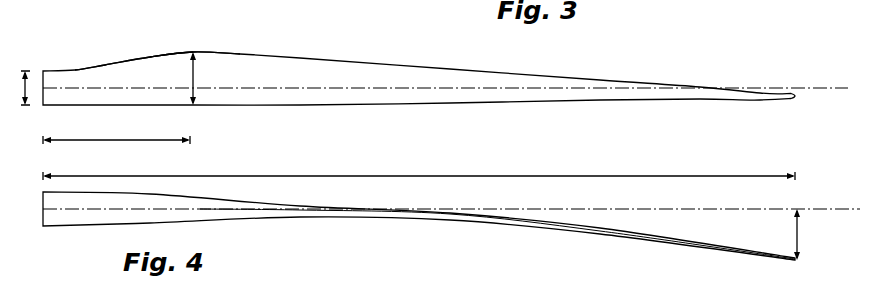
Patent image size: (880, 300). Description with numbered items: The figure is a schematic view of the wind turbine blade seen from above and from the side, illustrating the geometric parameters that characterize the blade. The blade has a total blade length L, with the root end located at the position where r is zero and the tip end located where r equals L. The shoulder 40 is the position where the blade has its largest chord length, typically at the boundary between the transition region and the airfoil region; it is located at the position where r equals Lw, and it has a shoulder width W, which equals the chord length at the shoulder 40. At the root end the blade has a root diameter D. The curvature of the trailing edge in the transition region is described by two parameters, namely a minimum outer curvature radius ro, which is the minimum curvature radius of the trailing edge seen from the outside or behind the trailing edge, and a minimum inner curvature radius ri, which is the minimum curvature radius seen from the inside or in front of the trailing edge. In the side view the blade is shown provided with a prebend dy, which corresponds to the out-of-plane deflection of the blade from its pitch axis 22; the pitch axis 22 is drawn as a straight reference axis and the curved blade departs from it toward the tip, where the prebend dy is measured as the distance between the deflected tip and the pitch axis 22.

In FIG. 3, the pitch axis 22 is at (341, 88).
In FIG. 4, the pitch axis 22 is at (813, 209).
In FIG. 3, the shoulder 40 is at (193, 52).
In FIG. 4, the total blade length L is at (419, 169).
In FIG. 4, the prebend dy is at (806, 234).
In FIG. 3, the root diameter D is at (20, 88).
In FIG. 3, the shoulder width W is at (202, 78).
In FIG. 3, the shoulder position Lw is at (116, 132).
In FIG. 3, the minimum outer curvature radius ro is at (105, 63).
In FIG. 3, the minimum inner curvature radius ri is at (165, 60).